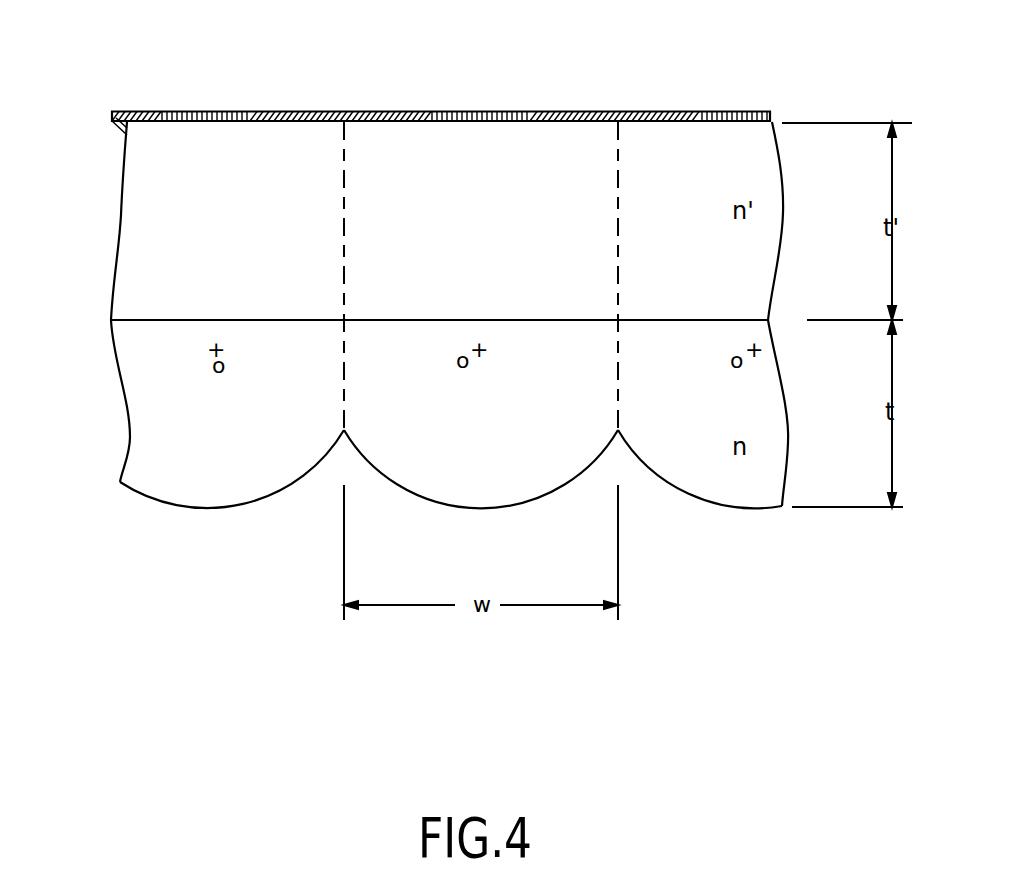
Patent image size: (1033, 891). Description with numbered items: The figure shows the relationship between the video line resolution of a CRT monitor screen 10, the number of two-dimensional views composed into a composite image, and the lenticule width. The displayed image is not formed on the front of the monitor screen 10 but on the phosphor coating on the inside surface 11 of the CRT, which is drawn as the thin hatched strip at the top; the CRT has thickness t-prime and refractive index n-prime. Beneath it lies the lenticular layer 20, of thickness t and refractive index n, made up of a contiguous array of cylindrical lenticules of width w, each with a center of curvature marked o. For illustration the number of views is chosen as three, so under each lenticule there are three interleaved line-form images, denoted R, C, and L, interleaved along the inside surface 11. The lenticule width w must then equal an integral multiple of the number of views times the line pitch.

The monitor screen 10 is at (160, 269).
The inside surface 11 is at (125, 128).
The lenticular layer 20 is at (157, 420).
The right line-form image R is at (157, 111).
The center line-form image C is at (192, 111).
The left line-form image L is at (277, 111).